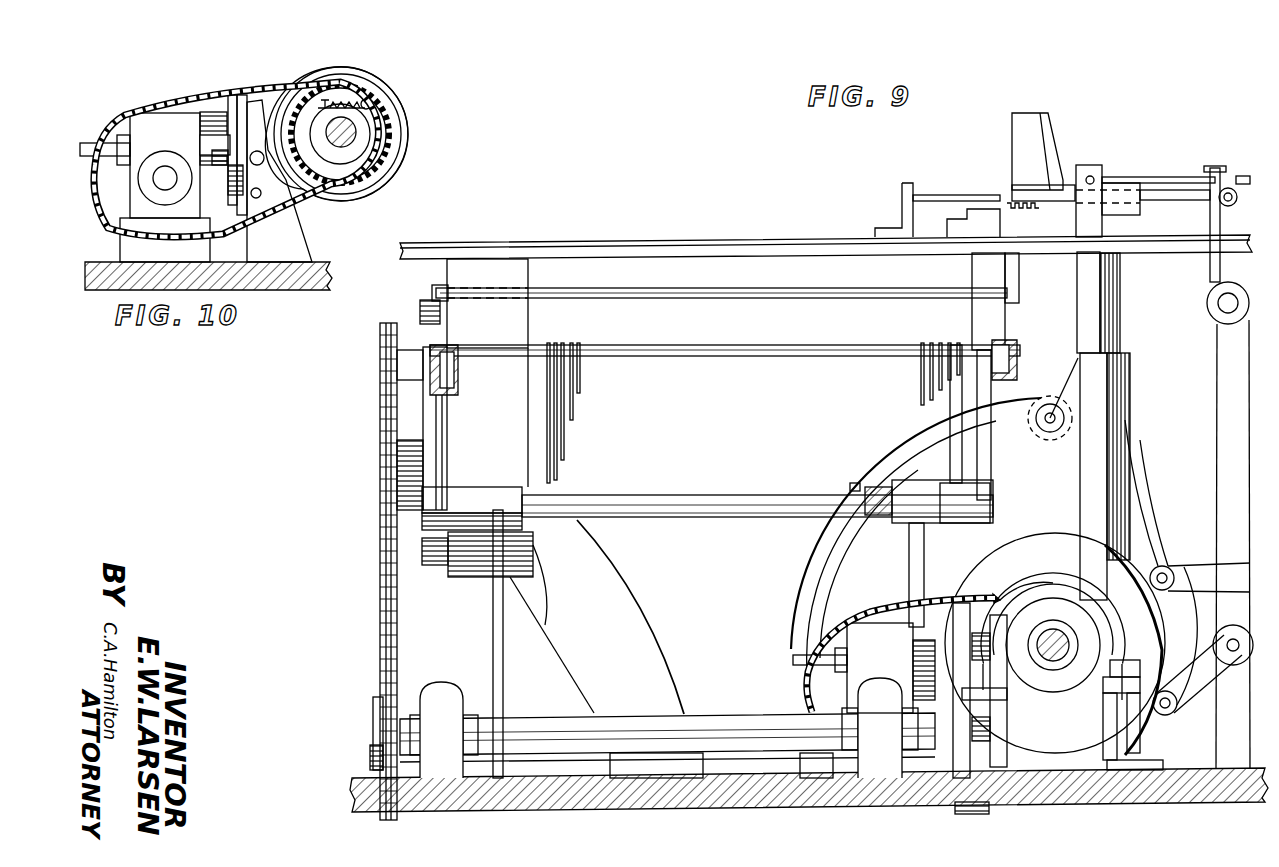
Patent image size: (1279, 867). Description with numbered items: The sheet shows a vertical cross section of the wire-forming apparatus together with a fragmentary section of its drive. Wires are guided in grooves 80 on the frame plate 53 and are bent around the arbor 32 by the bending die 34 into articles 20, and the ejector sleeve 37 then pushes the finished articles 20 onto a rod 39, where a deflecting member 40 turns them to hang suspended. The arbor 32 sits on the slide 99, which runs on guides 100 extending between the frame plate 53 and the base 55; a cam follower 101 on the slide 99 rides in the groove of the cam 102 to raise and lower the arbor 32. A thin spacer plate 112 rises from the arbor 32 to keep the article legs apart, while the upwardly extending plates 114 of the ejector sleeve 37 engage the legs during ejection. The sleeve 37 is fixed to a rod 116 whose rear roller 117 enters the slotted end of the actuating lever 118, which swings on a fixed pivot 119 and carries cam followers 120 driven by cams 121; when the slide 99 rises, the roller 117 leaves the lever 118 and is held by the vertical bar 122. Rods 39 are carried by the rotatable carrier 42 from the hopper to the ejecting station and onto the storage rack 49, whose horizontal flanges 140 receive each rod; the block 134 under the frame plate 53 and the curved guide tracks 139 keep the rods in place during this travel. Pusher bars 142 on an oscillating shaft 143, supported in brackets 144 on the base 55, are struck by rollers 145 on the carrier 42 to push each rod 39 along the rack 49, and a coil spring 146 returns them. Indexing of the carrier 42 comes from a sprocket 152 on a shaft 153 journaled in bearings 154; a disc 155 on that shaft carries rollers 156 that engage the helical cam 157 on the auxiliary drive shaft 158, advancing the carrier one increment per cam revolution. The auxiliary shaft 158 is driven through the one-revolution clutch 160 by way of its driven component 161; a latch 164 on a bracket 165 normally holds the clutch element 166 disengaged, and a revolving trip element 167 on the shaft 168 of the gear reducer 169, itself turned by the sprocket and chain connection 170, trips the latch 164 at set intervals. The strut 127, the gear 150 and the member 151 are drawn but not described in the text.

In FIG. 9, the articles 20 is at (556, 452).
In FIG. 9, the arbor 32 is at (1015, 188).
In FIG. 9, the bending die 34 is at (970, 222).
In FIG. 9, the ejector sleeve 37 is at (1030, 205).
In FIG. 9, the rod 39 is at (780, 320).
In FIG. 9, the deflecting member 40 is at (980, 196).
In FIG. 9, the rotatable carrier 42 is at (536, 552).
In FIG. 9, the storage rack 49 is at (458, 373).
In FIG. 9, the frame plate 53 is at (568, 243).
In FIG. 10, the base 55 is at (98, 270).
In FIG. 9, the base 55 is at (760, 782).
In FIG. 9, the grooves 80 is at (1045, 168).
In FIG. 9, the slide 99 is at (1105, 408).
In FIG. 9, the guides 100 is at (1100, 297).
In FIG. 9, the cam follower 101 is at (1050, 432).
In FIG. 9, the cam 102 is at (1022, 388).
In FIG. 9, the spacer plate 112 is at (1012, 138).
In FIG. 9, the upwardly extending plates 114 is at (1052, 150).
In FIG. 9, the rod 116 is at (1183, 196).
In FIG. 9, the roller 117 is at (1232, 199).
In FIG. 9, the actuating lever 118 is at (1230, 450).
In FIG. 9, the fixed pivot 119 is at (1225, 700).
In FIG. 9, the cam followers 120 is at (1168, 566).
In FIG. 9, the cams 121 is at (1058, 533).
In FIG. 9, the vertical bar 122 is at (1210, 176).
In FIG. 9, the strut 127 is at (645, 633).
In FIG. 9, the block 134 is at (515, 322).
In FIG. 9, the curved guide tracks 139 is at (985, 312).
In FIG. 9, the horizontal flanges 140 is at (452, 392).
In FIG. 9, the pusher bars 142 is at (412, 357).
In FIG. 9, the shaft 143 is at (734, 495).
In FIG. 9, the brackets 144 is at (493, 640).
In FIG. 9, the rollers 145 is at (426, 310).
In FIG. 9, the coil spring 146 is at (878, 487).
In FIG. 9, the gear wheel 150 is at (380, 423).
In FIG. 9, the hub 151 is at (383, 565).
In FIG. 9, the sprocket 152 is at (378, 708).
In FIG. 9, the shaft 153 is at (722, 716).
In FIG. 9, the bearings 154 is at (444, 700).
In FIG. 9, the disc 155 is at (985, 706).
In FIG. 9, the rollers 156 is at (990, 645).
In FIG. 9, the helical cam 157 is at (1066, 576).
In FIG. 10, the auxiliary drive shaft 158 is at (358, 132).
In FIG. 9, the auxiliary drive shaft 158 is at (1062, 658).
In FIG. 10, the one-revolution clutch 160 is at (362, 72).
In FIG. 10, the driven clutch component 161 is at (365, 152).
In FIG. 10, the latch 164 is at (284, 108).
In FIG. 10, the bracket 165 is at (300, 238).
In FIG. 10, the clutch element 166 is at (240, 96).
In FIG. 10, the trip element 167 is at (232, 95).
In FIG. 10, the shaft 168 is at (222, 118).
In FIG. 10, the gear reducer 169 is at (140, 130).
In FIG. 9, the gear reducer 169 is at (812, 688).
In FIG. 10, the sprocket and chain connection 170 is at (166, 94).
In FIG. 9, the sprocket and chain connection 170 is at (930, 600).